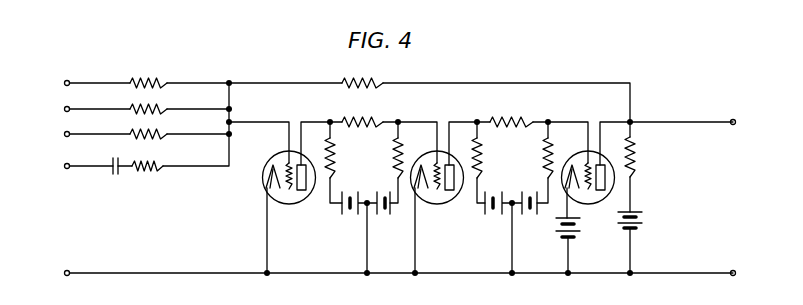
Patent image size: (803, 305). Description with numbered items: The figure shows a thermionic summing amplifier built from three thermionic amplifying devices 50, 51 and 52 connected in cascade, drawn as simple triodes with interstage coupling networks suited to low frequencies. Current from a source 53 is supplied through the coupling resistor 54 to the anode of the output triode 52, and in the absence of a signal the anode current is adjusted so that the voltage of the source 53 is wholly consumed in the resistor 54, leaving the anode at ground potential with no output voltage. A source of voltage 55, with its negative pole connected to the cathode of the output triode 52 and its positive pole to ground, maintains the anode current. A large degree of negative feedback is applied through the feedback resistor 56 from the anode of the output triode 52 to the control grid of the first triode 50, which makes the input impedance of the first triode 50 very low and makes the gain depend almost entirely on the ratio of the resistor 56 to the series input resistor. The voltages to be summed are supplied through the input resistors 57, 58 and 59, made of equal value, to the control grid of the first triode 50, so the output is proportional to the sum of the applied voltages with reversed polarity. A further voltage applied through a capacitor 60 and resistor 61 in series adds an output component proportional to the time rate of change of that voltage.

The thermionic amplifying device 50 is at (286, 204).
The thermionic amplifying device 51 is at (434, 204).
The output triode 52 is at (584, 204).
The source 53 is at (642, 216).
The coupling resistor 54 is at (636, 160).
The source of voltage 55 is at (558, 227).
The feedback resistor 56 is at (373, 83).
The input resistor 57 is at (166, 84).
The input resistor 58 is at (166, 110).
The input resistor 59 is at (166, 135).
The capacitor 60 is at (113, 177).
The resistor 61 is at (158, 171).